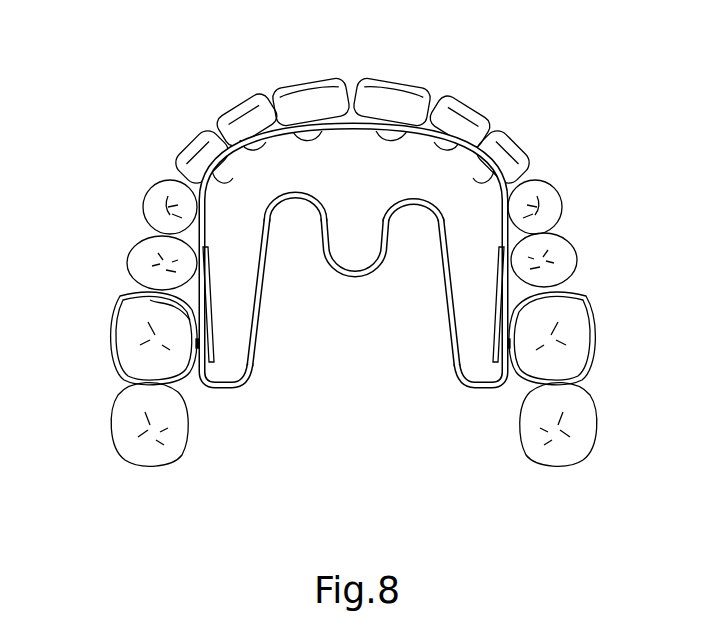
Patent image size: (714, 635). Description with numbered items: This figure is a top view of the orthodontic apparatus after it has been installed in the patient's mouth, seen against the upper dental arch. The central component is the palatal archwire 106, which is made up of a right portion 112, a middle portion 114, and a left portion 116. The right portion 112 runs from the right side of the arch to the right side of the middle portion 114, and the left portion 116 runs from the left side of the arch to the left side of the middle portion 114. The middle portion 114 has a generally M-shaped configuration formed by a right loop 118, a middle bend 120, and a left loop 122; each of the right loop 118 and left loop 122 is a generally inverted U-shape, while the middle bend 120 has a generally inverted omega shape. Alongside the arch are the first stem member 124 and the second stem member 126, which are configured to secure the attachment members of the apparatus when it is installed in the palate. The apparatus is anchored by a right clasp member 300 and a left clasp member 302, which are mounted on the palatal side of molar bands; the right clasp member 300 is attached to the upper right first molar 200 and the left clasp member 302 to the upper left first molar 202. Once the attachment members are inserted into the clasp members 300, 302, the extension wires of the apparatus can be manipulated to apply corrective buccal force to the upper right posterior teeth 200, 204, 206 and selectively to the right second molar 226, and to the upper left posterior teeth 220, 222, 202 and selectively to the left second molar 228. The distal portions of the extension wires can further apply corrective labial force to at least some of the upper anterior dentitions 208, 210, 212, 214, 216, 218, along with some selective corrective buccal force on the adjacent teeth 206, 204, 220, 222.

The palatal archwire 106 is at (197, 393).
The right portion 112 is at (270, 306).
The middle portion 114 is at (356, 226).
The left portion 116 is at (436, 290).
The right loop 118 is at (295, 200).
The middle bend 120 is at (353, 277).
The left loop 122 is at (407, 200).
The first stem member 124 is at (210, 303).
The second stem member 126 is at (497, 300).
The upper right first molar 200 is at (115, 382).
The upper left first molar 202 is at (575, 365).
The upper right posterior tooth 204 is at (128, 255).
The upper right posterior tooth 206 is at (148, 192).
The upper anterior dentition 208 is at (187, 130).
The upper anterior dentition 210 is at (247, 97).
The upper anterior dentition 212 is at (317, 77).
The upper anterior dentition 214 is at (407, 78).
The upper anterior dentition 216 is at (477, 100).
The upper anterior dentition 218 is at (537, 143).
The upper left posterior tooth 220 is at (562, 200).
The upper left posterior tooth 222 is at (577, 253).
The right second molar 226 is at (118, 450).
The left second molar 228 is at (580, 448).
The right clasp member 300 is at (198, 345).
The left clasp member 302 is at (515, 342).